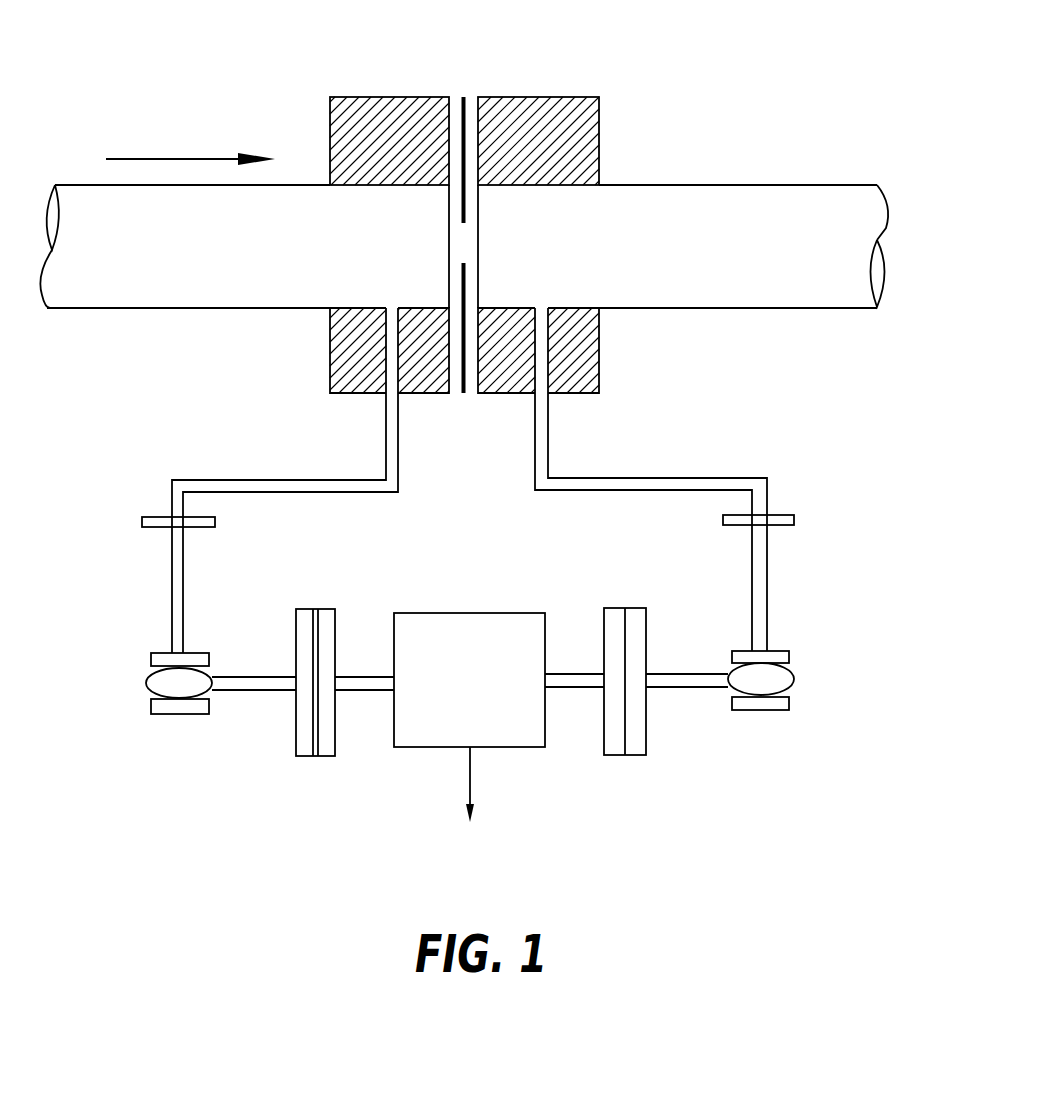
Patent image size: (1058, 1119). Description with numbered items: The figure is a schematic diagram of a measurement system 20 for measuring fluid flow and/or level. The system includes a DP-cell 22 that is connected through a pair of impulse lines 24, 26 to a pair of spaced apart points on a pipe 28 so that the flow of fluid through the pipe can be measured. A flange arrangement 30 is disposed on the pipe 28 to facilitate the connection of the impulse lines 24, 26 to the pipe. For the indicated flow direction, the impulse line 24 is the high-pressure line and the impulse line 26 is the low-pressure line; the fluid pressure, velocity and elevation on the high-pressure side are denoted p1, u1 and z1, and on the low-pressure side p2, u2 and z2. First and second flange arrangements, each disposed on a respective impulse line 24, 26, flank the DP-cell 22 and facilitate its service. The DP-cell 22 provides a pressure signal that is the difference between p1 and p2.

The measurement system 20 is at (828, 84).
The DP-cell 22 is at (457, 613).
The impulse line 24 is at (185, 575).
The impulse line 26 is at (749, 565).
The pipe 28 is at (747, 185).
The flange arrangement 30 is at (547, 82).